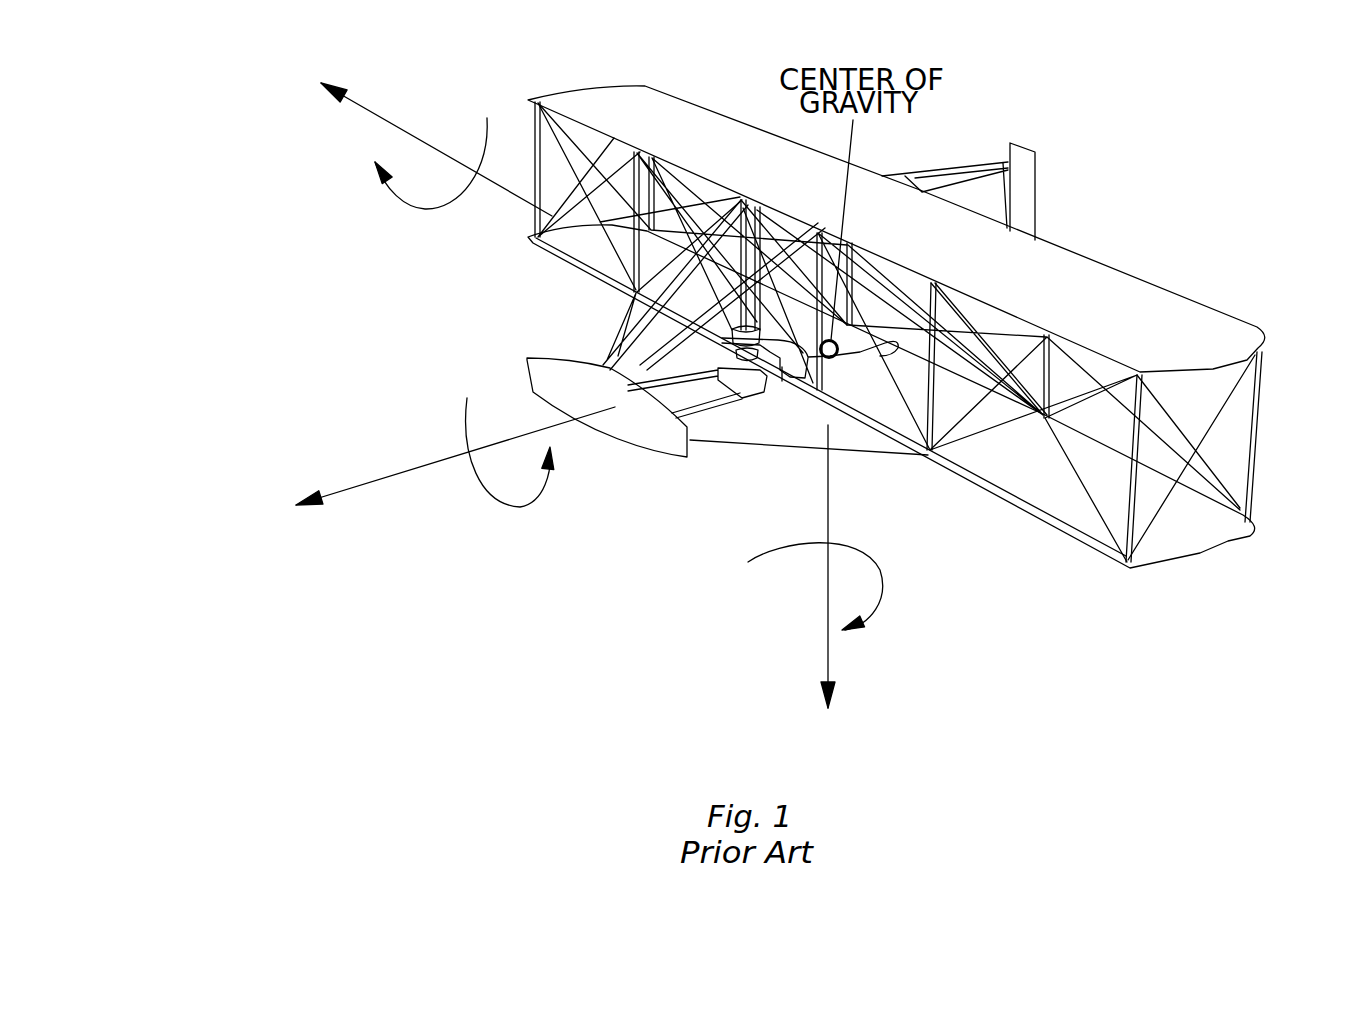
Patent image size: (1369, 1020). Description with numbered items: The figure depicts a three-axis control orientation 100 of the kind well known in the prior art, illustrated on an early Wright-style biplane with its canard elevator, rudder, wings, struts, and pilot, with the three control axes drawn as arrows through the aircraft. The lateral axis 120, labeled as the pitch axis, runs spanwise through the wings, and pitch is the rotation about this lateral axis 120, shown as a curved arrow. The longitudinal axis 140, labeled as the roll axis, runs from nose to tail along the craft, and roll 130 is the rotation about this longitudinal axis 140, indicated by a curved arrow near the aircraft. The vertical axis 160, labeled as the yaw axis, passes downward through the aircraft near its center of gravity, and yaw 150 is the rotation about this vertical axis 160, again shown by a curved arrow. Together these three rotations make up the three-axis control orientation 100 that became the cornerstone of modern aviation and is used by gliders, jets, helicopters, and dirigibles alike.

The three-axis control orientation 100 is at (432, 212).
The lateral axis 120 is at (397, 125).
The roll 130 is at (464, 420).
The longitudinal axis 140 is at (388, 478).
The yaw 150 is at (869, 528).
The vertical axis 160 is at (827, 607).